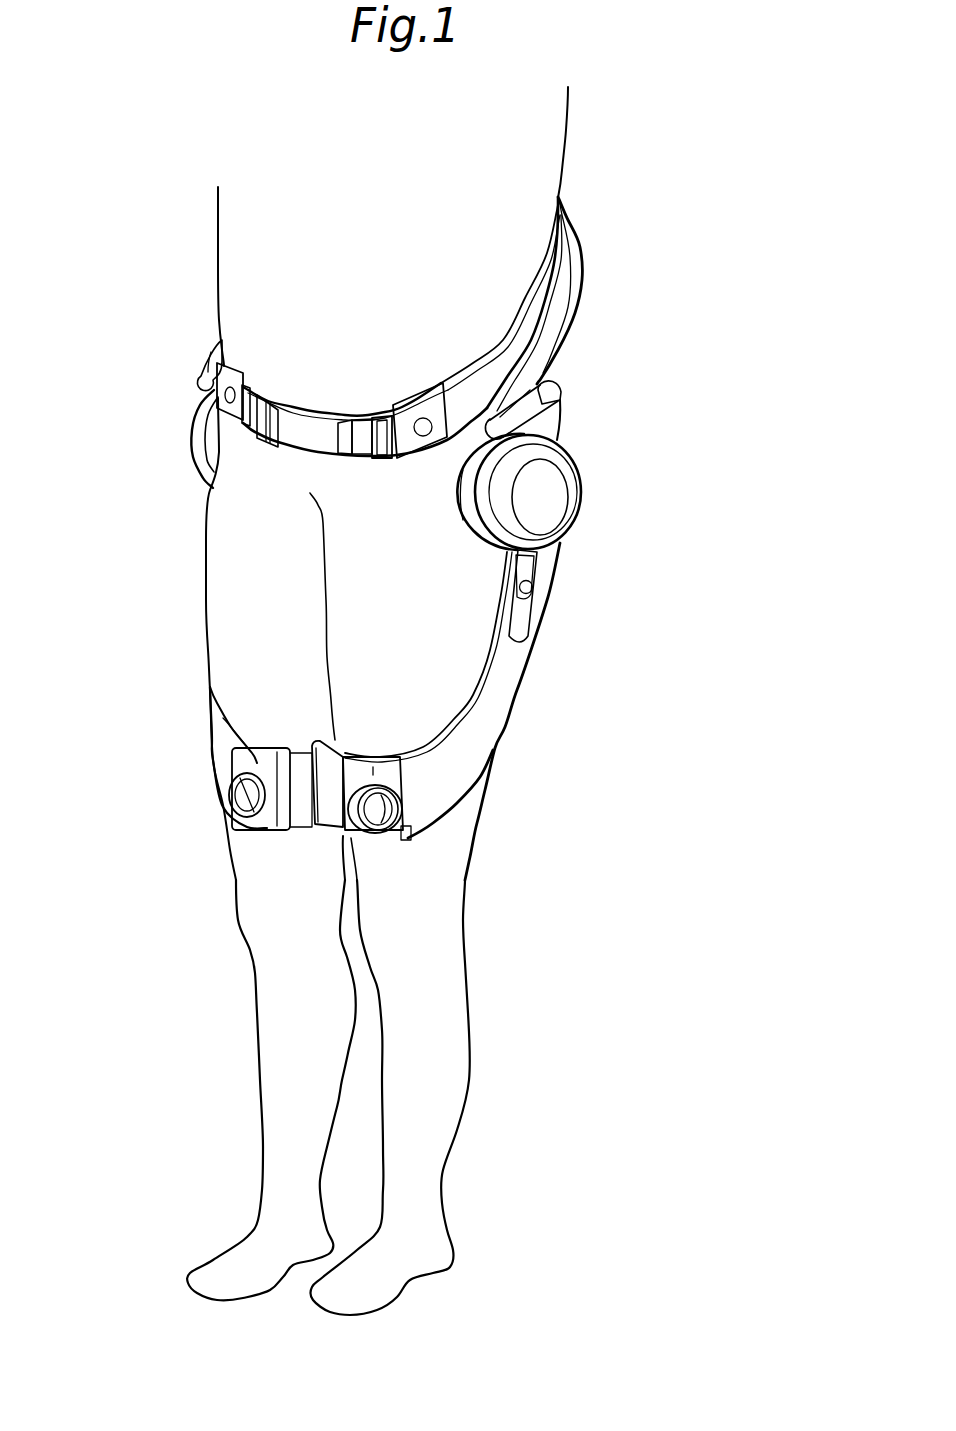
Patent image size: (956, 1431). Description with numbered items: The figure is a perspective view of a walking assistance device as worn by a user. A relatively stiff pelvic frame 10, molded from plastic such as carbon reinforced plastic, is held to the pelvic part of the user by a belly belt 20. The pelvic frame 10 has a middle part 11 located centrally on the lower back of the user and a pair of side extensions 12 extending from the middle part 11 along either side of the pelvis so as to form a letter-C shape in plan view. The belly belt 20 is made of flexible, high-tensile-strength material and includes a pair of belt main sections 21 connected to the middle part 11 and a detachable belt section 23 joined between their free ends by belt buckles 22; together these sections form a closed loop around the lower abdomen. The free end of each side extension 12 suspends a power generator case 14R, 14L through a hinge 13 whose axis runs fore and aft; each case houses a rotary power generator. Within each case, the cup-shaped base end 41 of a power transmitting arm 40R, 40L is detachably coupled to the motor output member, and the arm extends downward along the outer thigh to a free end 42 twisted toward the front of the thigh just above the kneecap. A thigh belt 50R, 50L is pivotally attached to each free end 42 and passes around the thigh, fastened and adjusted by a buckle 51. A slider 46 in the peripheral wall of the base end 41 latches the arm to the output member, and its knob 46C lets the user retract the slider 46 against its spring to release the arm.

The pelvic frame 10 is at (579, 284).
The middle part 11 is at (572, 218).
The side extension 12 is at (553, 344).
The hinge 13 is at (212, 362).
The power generator case 14R is at (210, 445).
The power generator case 14L is at (470, 503).
The belly belt 20 is at (517, 346).
The belt main section 21 is at (480, 372).
The belt buckle 22 is at (231, 384).
The detachable belt section 23 is at (312, 420).
The power transmitting arm 40R is at (215, 751).
The power transmitting arm 40L is at (487, 707).
The base end 41 is at (203, 425).
The free end 42 is at (240, 817).
The slider 46 is at (535, 562).
The knob 46C is at (532, 586).
The thigh belt 50R is at (217, 713).
The thigh belt 50L is at (475, 798).
The buckle 51 is at (267, 822).